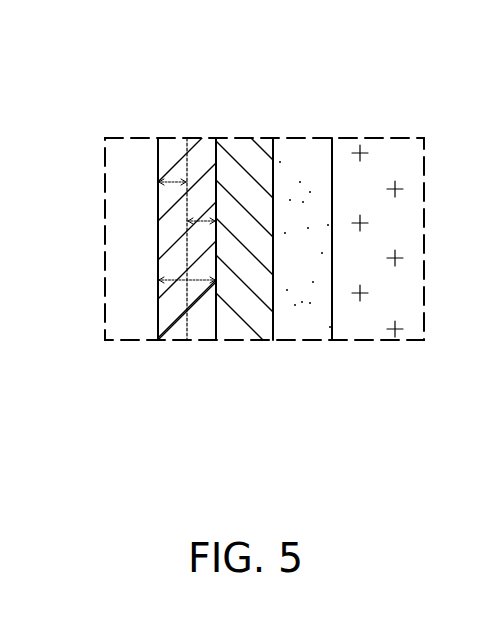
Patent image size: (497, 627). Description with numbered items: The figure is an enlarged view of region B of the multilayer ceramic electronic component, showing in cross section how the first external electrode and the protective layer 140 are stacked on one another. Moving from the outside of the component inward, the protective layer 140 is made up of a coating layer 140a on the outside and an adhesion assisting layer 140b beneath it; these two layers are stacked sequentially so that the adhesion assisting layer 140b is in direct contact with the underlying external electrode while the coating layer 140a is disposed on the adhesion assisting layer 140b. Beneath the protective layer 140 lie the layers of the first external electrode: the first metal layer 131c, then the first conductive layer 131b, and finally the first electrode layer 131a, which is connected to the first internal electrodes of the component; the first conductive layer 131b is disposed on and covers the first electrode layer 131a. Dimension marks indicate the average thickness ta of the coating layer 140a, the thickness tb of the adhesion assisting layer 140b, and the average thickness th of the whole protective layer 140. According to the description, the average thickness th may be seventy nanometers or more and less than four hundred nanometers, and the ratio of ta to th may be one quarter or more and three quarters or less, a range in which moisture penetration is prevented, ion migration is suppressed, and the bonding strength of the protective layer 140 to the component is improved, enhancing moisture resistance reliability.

The protective layer 140 is at (250, 65).
The coating layer 140a is at (172, 150).
The adhesion assisting layer 140b is at (203, 150).
The first metal layer 131c is at (243, 140).
The first conductive layer 131b is at (305, 147).
The first electrode layer 131a is at (378, 145).
The average thickness of the coating layer ta is at (174, 185).
The thickness of second electrode sublayer tb is at (203, 224).
The average thickness of the protective layer th is at (215, 282).
The region B is at (277, 450).